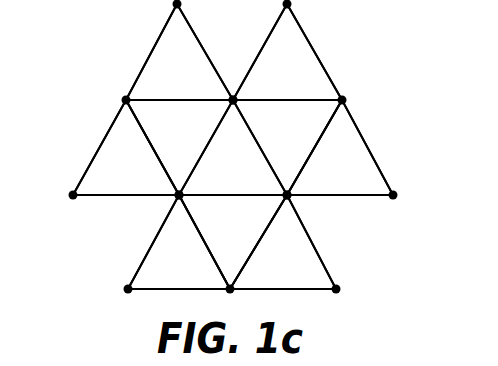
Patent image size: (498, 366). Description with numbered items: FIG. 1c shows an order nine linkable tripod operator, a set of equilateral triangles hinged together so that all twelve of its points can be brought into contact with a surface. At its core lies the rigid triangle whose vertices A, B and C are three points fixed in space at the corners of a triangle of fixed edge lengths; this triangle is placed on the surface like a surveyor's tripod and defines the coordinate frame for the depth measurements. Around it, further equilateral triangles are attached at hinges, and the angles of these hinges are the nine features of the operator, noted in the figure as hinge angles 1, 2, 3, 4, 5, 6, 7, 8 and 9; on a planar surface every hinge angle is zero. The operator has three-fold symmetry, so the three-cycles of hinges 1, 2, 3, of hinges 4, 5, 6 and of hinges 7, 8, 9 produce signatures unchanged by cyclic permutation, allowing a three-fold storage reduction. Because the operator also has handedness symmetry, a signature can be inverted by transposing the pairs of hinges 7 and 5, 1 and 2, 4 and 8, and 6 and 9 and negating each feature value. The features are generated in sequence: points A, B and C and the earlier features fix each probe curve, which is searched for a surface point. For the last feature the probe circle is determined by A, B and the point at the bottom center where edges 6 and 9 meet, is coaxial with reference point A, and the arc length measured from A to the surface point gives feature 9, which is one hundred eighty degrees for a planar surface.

The hinge angle 1 is at (223, 148).
The hinge angle 2 is at (237, 141).
The hinge angle 3 is at (238, 182).
The hinge angle 4 is at (167, 143).
The hinge angle 5 is at (298, 111).
The hinge angle 6 is at (248, 228).
The hinge angle 7 is at (160, 112).
The hinge angle 8 is at (307, 137).
The hinge angle 9 is at (215, 232).
The vertex of rigid triangle A is at (298, 205).
The vertex of rigid triangle B is at (166, 205).
The vertex of rigid triangle C is at (233, 82).